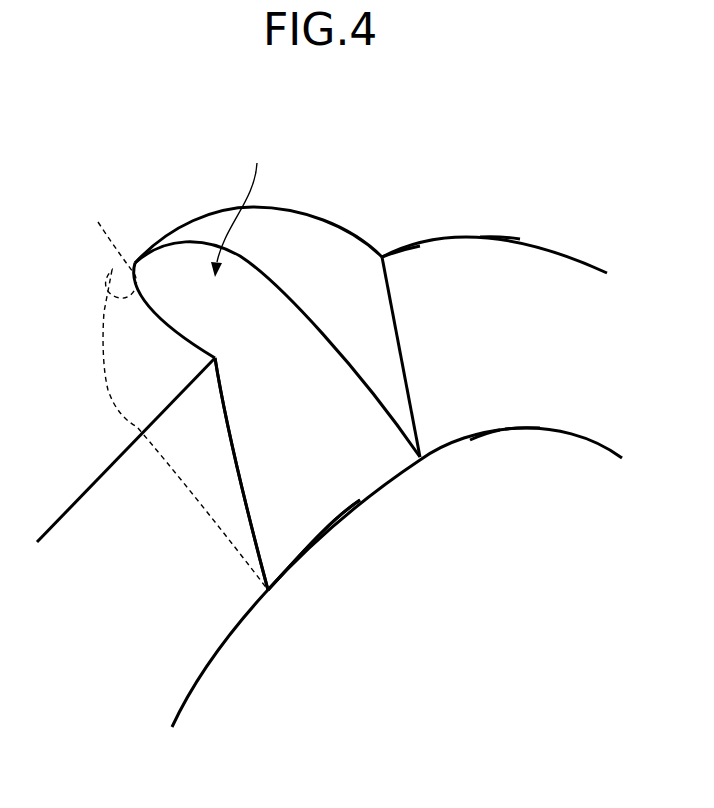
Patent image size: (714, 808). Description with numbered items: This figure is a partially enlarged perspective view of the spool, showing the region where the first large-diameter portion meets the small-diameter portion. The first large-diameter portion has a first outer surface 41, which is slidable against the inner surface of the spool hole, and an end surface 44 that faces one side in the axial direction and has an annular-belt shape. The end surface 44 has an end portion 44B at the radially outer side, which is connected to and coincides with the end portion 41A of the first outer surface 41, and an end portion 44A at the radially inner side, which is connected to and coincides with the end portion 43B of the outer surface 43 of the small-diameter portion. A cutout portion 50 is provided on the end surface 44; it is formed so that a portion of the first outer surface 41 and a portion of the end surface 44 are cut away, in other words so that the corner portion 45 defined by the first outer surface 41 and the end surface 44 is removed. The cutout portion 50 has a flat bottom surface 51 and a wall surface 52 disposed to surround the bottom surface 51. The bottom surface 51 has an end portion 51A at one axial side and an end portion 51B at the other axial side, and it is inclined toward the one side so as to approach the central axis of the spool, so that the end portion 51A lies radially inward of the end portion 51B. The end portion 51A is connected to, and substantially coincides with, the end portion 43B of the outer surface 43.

The first outer surface 41 is at (335, 195).
The end portion 41A is at (420, 243).
The outer surface 43 is at (510, 568).
The end portion 43B is at (487, 435).
The end surface 44 is at (472, 265).
The end portion 44A is at (520, 428).
The end portion 44B is at (497, 233).
The corner portion 45 is at (90, 480).
The cutout portion 50 is at (241, 208).
The bottom surface 51 is at (332, 433).
The end portion 51A is at (317, 543).
The end portion 51B is at (174, 393).
The wall surface 52 is at (363, 320).